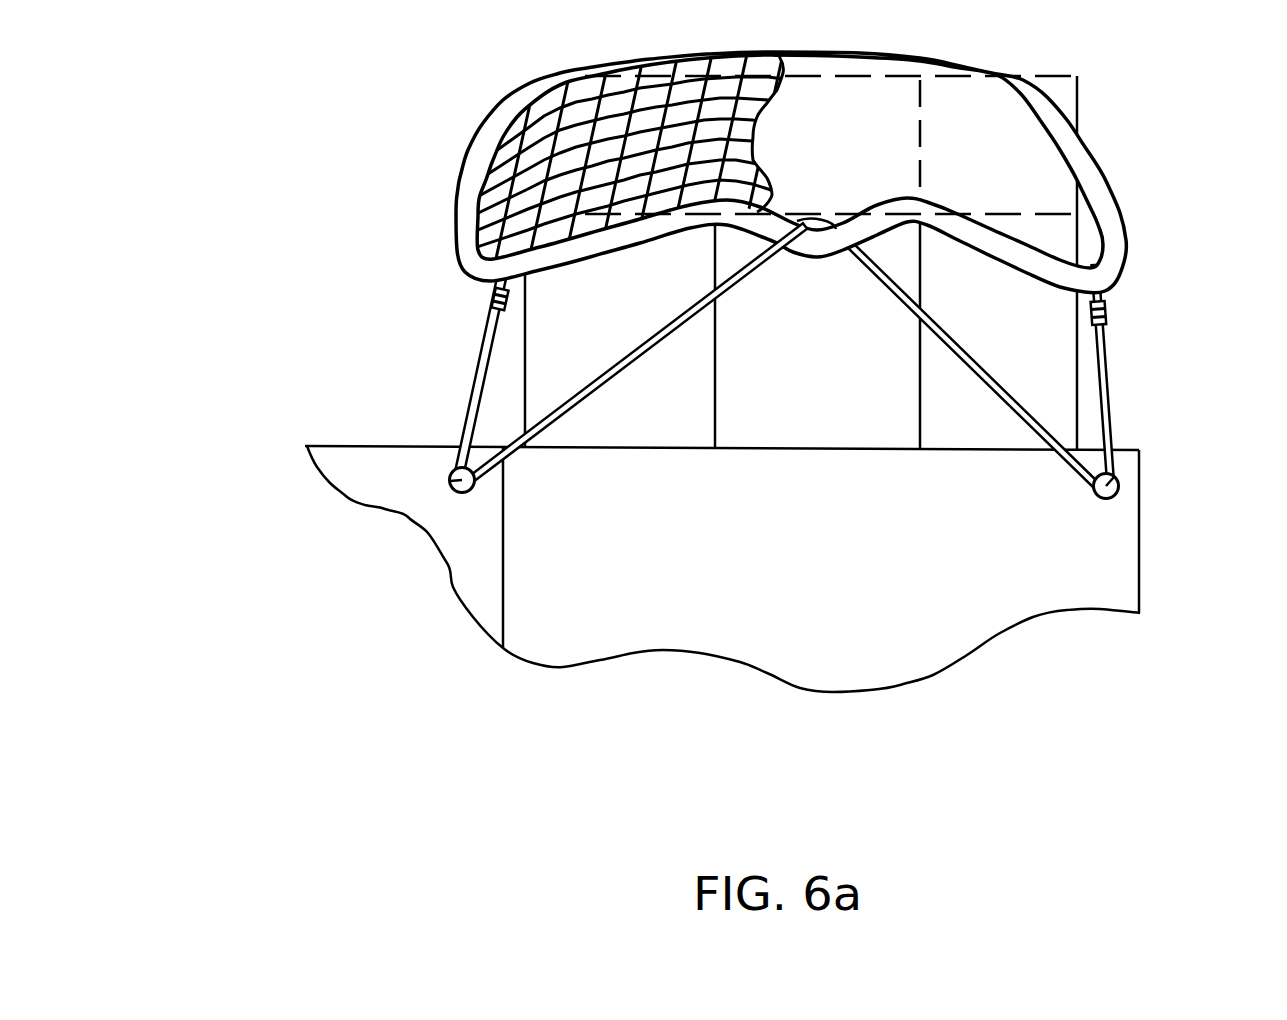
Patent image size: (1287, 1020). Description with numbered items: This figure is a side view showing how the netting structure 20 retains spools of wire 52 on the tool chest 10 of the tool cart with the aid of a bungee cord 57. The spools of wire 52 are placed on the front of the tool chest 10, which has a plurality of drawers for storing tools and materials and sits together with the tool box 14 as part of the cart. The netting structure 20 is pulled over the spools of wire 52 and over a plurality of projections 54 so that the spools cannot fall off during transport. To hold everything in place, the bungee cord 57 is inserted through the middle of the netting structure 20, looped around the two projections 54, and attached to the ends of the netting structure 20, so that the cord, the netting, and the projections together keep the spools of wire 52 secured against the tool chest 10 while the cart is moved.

The tool chest 10 is at (1110, 565).
The tool box 14 is at (412, 446).
The netting structure 20 is at (467, 157).
The spools of wire 52 is at (1047, 320).
The projections 54 is at (450, 482).
The bungee cord 57 is at (497, 295).